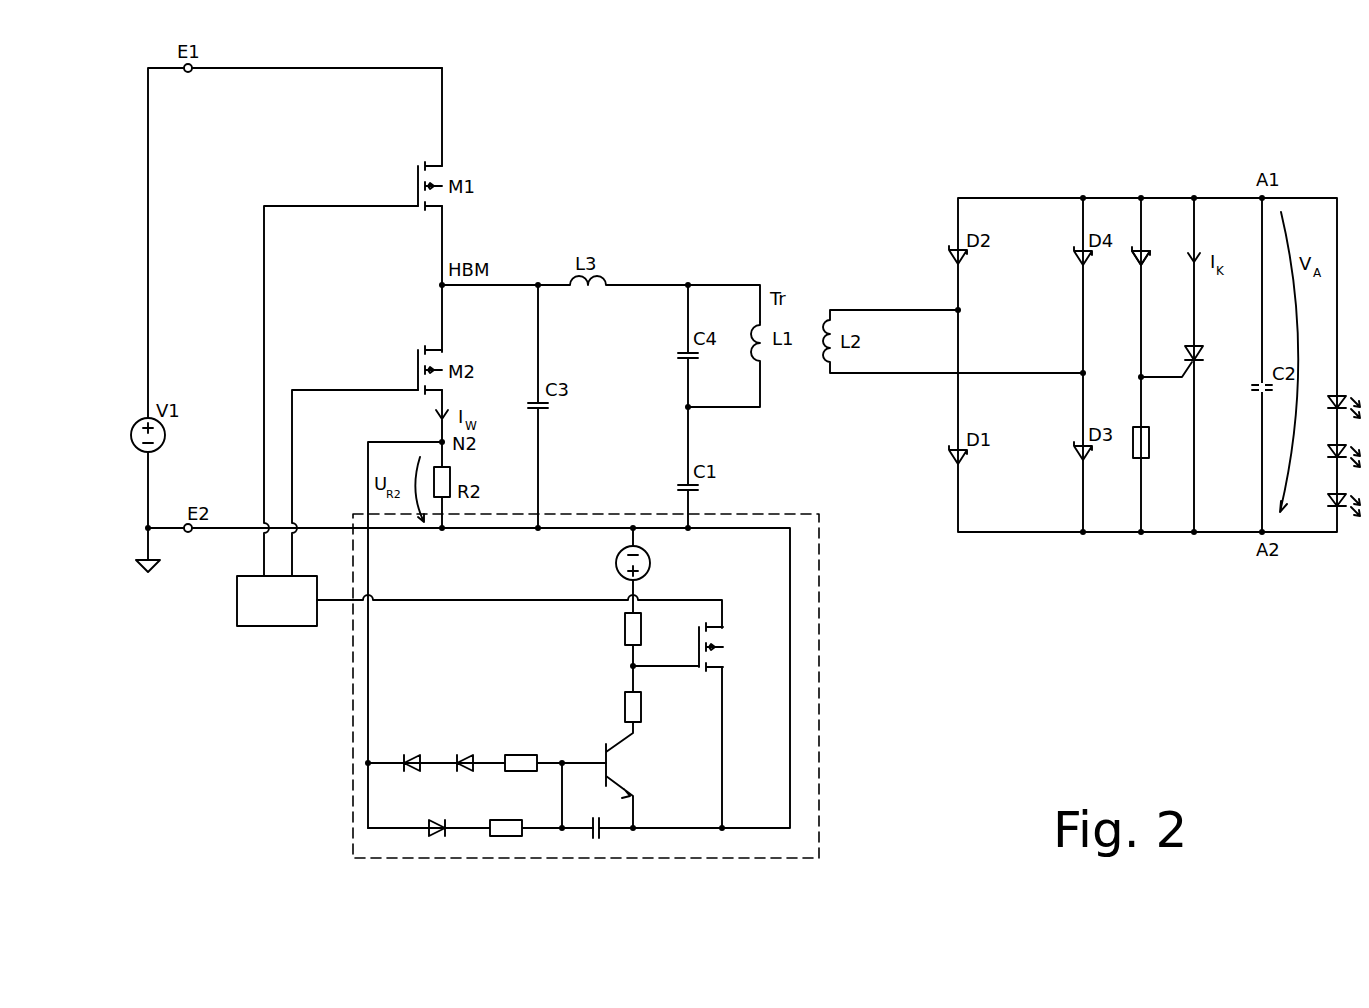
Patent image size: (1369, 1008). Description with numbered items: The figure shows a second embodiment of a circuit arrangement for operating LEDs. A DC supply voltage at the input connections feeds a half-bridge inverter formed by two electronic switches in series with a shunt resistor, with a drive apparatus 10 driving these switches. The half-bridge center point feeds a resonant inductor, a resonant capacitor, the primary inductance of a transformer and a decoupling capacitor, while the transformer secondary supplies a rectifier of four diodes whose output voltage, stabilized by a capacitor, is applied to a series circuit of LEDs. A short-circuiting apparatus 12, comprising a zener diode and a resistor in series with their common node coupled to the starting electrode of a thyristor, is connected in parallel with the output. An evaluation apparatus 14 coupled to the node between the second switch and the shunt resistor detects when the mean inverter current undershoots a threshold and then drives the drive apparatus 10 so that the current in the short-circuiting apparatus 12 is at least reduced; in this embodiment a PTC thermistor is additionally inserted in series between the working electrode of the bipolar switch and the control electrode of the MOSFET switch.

The drive apparatus 10 is at (277, 618).
The short-circuiting apparatus 12 is at (1206, 545).
The evaluation apparatus 14 is at (819, 630).